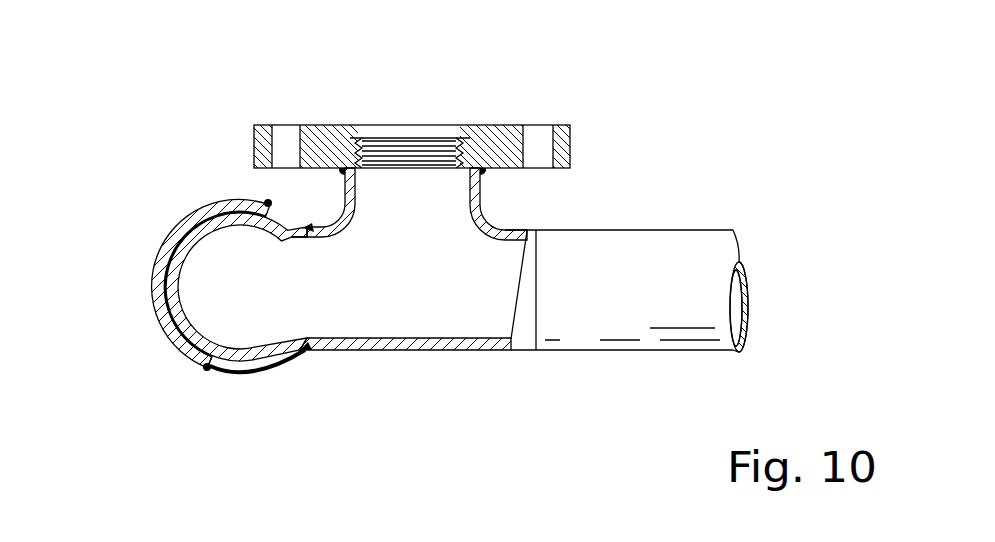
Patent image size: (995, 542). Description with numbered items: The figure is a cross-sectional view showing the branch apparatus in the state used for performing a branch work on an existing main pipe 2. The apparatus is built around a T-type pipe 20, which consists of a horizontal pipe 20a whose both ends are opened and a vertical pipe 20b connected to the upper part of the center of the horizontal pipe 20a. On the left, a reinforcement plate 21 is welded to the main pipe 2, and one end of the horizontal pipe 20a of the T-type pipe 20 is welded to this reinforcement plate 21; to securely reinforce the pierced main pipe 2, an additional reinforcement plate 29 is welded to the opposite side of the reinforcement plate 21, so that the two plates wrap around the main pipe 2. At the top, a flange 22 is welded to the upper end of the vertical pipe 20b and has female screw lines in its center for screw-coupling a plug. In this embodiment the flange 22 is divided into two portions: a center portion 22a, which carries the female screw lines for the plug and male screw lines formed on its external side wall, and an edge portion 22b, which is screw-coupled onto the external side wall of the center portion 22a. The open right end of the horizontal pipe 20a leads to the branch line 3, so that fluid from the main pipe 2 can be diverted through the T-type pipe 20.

The main pipe 2 is at (212, 364).
The tube 3 is at (615, 332).
The T-type pipe 20 is at (438, 317).
The horizontal pipe 20a is at (367, 351).
The vertical pipe 20b is at (479, 200).
The reinforcement plate 21 is at (263, 374).
The flange 22 is at (449, 92).
The center portion 22a is at (428, 110).
The edge portion 22b is at (567, 128).
The additional reinforcement plate 29 is at (167, 253).